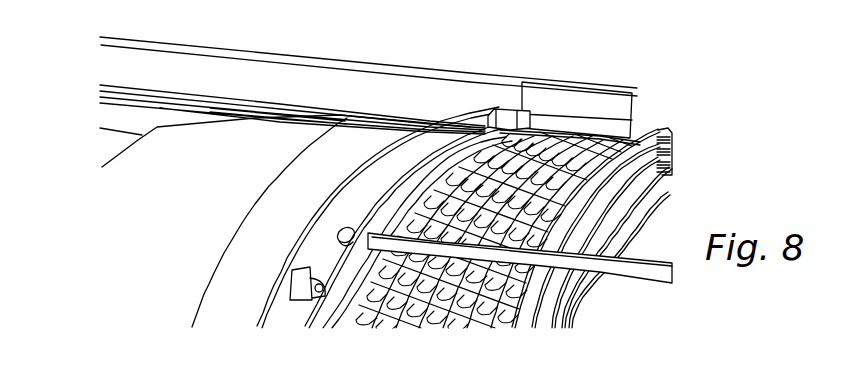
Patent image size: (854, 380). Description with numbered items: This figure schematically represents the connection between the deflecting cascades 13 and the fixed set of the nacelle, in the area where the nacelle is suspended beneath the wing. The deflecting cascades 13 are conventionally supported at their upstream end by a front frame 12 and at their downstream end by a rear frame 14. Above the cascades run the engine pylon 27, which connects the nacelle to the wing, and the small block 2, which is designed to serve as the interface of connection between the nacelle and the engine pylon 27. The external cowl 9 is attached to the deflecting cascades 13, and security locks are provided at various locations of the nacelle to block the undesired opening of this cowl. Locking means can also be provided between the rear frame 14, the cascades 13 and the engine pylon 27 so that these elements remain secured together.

The small block 2 is at (128, 117).
The external cowl 9 is at (243, 287).
The front frame 12 is at (645, 153).
The deflecting cascades 13 is at (557, 133).
The rear frame 14 is at (476, 120).
The engine pylon 27 is at (420, 100).